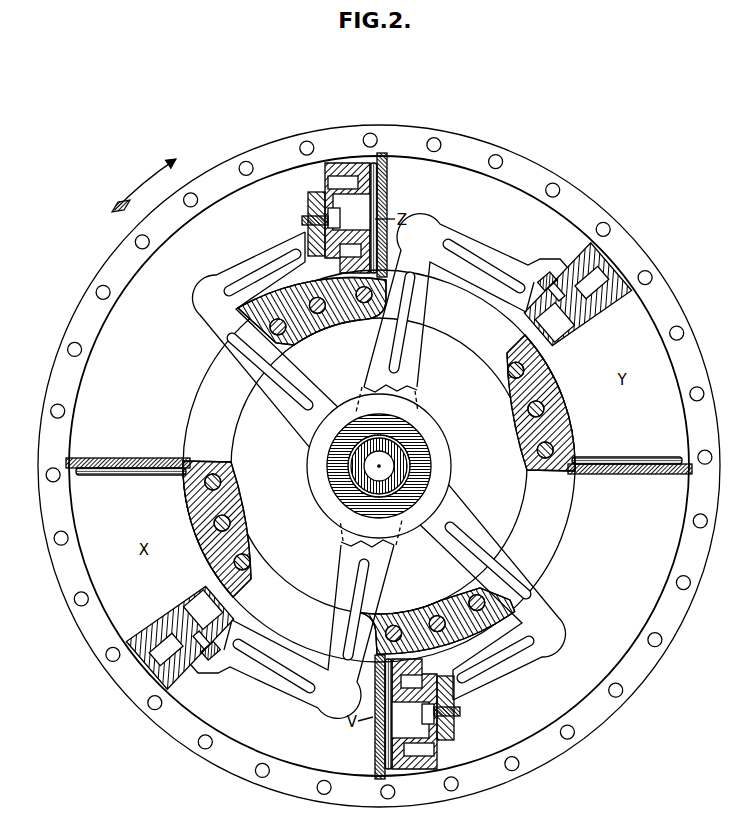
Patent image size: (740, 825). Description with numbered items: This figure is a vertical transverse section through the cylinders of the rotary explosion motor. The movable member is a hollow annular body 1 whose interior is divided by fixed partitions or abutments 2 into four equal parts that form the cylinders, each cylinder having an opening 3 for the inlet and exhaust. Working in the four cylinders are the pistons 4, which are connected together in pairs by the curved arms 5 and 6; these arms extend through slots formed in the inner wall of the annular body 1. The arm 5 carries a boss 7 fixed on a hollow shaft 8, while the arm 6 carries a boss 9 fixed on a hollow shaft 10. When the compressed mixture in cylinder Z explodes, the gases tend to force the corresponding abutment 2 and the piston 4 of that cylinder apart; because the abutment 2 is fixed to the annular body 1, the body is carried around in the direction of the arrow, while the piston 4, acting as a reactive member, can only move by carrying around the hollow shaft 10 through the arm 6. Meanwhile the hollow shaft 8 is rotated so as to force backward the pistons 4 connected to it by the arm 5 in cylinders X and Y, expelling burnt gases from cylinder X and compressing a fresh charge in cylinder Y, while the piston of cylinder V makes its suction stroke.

The hollow annular body 1 is at (465, 147).
The fixed partitions or abutments 2 is at (387, 162).
The opening 3 is at (380, 152).
The pistons 4 is at (367, 163).
The curved arm 5 is at (379, 466).
The curved arm 6 is at (378, 466).
The boss 7 is at (330, 487).
The hollow shaft 8 is at (350, 497).
The boss 9 is at (437, 450).
The hollow shaft 10 is at (430, 466).